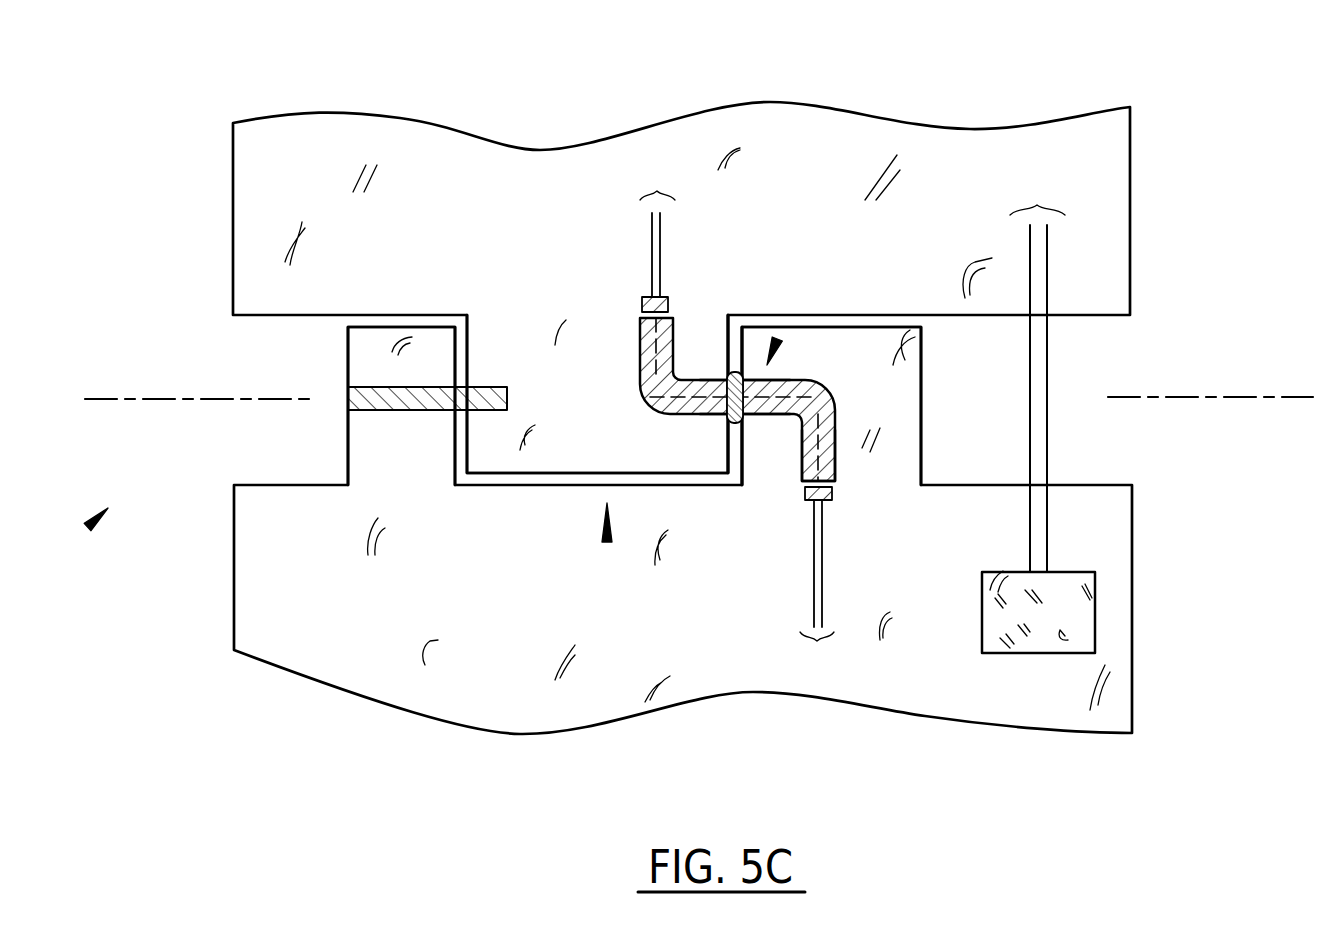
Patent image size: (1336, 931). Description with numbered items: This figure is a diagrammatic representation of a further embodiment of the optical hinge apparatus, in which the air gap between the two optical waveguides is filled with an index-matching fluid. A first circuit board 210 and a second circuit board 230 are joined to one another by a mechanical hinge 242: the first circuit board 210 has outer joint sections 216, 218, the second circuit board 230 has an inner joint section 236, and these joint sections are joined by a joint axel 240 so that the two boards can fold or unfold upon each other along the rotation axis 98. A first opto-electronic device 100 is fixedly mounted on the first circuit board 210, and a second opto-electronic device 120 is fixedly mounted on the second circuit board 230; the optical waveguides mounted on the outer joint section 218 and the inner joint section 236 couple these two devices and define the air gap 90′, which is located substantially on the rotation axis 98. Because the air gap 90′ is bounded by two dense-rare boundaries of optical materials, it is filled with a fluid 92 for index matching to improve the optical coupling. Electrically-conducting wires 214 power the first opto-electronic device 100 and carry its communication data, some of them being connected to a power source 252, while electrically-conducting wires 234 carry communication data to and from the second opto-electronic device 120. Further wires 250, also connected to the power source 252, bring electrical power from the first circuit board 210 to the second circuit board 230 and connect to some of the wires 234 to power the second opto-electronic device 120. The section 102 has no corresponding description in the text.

The second circuit board 230 is at (310, 178).
The first circuit board 210 is at (382, 655).
The outer joint section 216 is at (358, 335).
The outer joint section 218 is at (907, 448).
The inner joint section 236 is at (507, 450).
The joint axel 240 is at (358, 402).
The horizontal conduit section 102 is at (778, 398).
The air gap 90′ is at (733, 363).
The fluid 92 is at (730, 423).
The second opto-electronic device 120 is at (645, 298).
The electrically-conducting wires 234 is at (657, 190).
The first opto-electronic device 100 is at (832, 503).
The electrically-conducting wires 214 is at (817, 641).
The electrically-conducting wires 250 is at (1040, 205).
The power source 252 is at (1075, 622).
The rotation axis 98 is at (1292, 397).
The mechanical hinge 242 is at (607, 540).